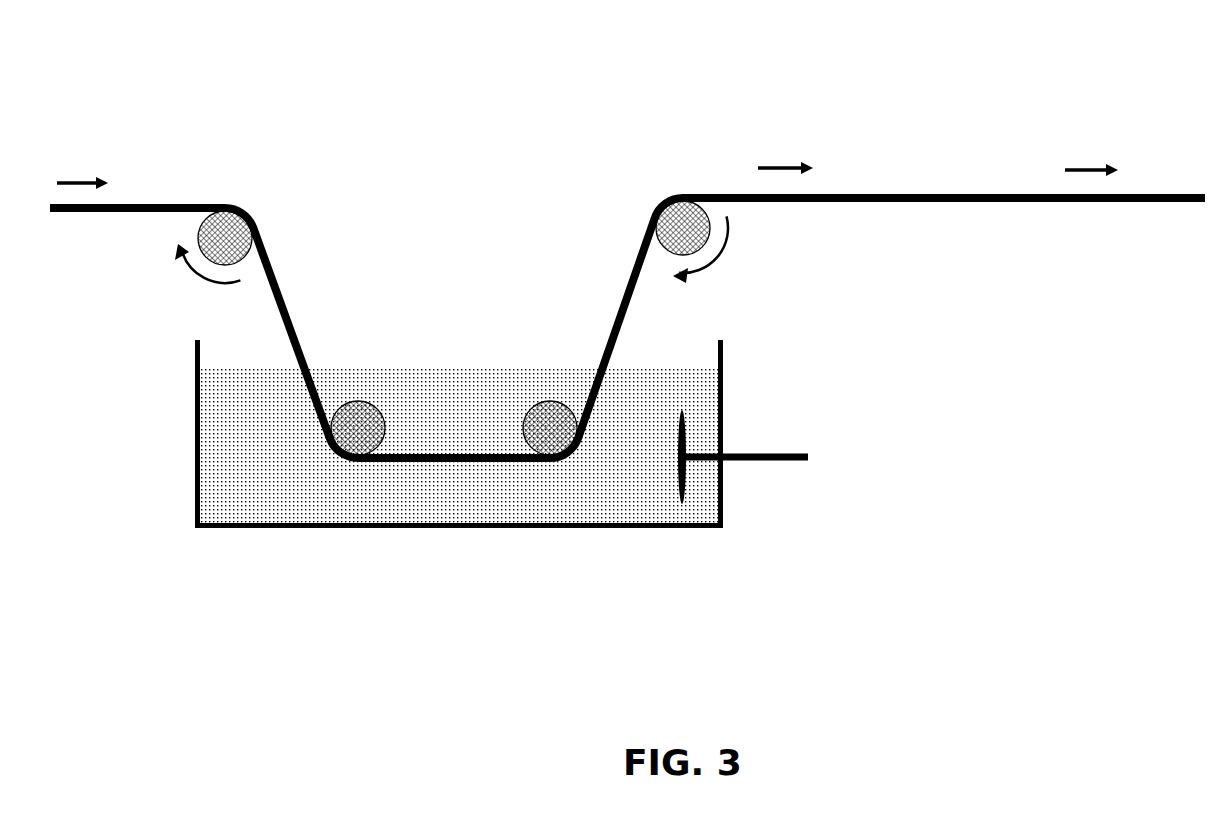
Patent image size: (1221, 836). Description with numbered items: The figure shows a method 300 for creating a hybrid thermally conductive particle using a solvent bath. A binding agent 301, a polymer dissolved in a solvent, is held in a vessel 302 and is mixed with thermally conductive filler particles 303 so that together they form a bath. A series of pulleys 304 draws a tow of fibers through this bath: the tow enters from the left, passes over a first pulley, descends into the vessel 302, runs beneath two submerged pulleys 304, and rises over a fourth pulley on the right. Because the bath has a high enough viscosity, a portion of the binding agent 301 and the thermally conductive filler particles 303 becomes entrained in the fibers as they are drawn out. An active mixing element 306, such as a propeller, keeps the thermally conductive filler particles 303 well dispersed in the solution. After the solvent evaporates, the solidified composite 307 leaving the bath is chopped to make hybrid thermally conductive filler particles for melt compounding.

The method 300 is at (352, 128).
The binding agent 301 is at (128, 202).
The vessel 302 is at (196, 388).
The thermally conductive filler particles 303 is at (686, 390).
The pulleys 304 is at (225, 245).
The active mixing element 306 is at (788, 452).
The solidified composite 307 is at (835, 196).